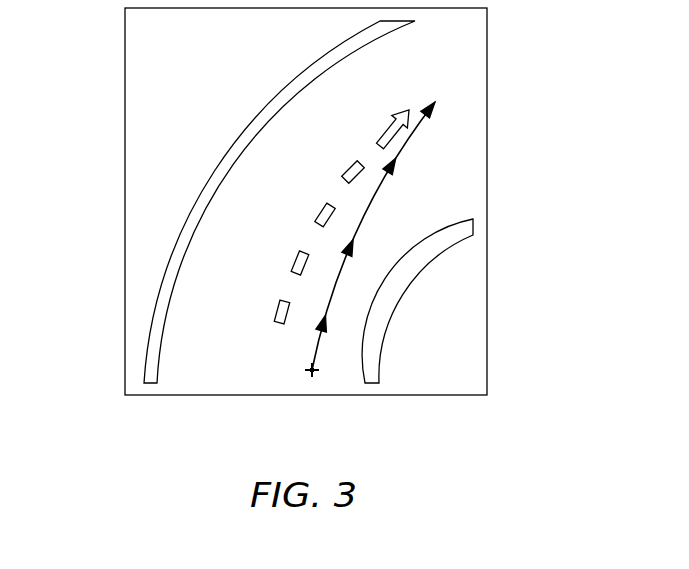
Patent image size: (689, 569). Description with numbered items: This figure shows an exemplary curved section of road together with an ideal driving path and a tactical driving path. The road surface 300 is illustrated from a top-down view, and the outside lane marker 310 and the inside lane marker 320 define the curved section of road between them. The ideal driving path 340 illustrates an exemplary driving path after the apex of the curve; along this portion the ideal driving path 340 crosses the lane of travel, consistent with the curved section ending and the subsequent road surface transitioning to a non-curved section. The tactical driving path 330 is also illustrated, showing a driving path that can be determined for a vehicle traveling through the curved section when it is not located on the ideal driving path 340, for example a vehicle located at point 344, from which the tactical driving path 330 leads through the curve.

The road surface 300 is at (245, 205).
The outside lane marker 310 is at (246, 131).
The inside lane marker 320 is at (405, 303).
The tactical driving path 330 is at (362, 223).
The ideal driving path 340 is at (358, 182).
The point 344 is at (311, 373).